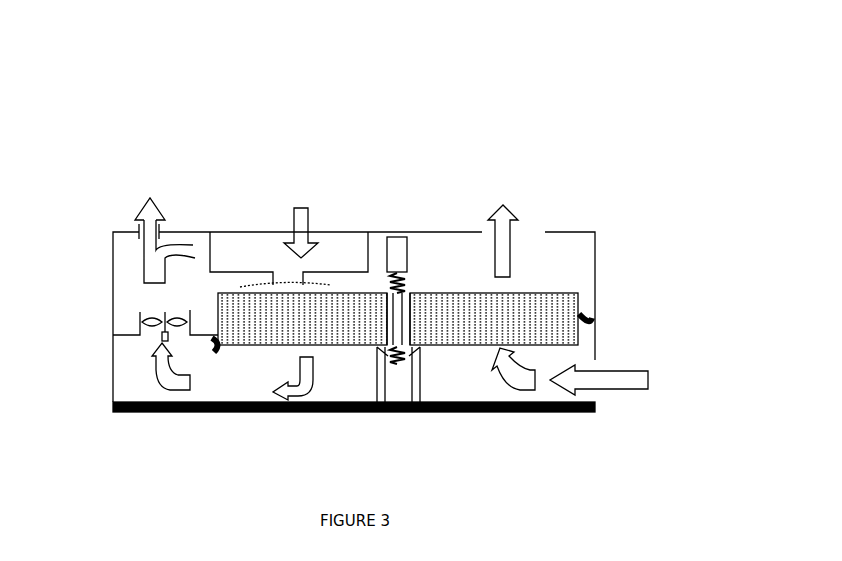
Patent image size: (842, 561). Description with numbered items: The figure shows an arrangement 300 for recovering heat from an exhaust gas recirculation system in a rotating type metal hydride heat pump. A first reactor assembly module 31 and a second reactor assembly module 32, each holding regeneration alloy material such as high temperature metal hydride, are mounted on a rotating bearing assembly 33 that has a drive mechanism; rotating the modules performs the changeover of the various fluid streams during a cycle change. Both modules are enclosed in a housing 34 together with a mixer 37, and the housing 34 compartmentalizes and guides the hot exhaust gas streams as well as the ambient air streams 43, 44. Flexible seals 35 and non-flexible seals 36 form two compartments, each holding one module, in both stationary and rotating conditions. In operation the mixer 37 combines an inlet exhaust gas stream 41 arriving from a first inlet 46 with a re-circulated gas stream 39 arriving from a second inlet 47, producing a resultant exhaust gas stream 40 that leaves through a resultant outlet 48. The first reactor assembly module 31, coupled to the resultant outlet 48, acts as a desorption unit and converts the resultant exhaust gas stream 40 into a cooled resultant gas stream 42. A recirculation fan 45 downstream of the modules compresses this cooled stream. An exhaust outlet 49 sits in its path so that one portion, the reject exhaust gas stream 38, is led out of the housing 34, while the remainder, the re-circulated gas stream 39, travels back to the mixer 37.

The arrangement 300 is at (644, 106).
The first reactor assembly module 31 is at (243, 336).
The second reactor assembly module 32 is at (475, 326).
The rotating bearing assembly 33 is at (378, 359).
The housing 34 is at (598, 240).
The flexible seal 35 is at (392, 272).
The non-flexible seal 36 is at (396, 248).
The mixer 37 is at (229, 243).
The reject exhaust gas stream 38 is at (142, 201).
The re-circulated gas stream 39 is at (192, 243).
The resultant exhaust gas stream 40 is at (268, 284).
The inlet exhaust gas stream 41 is at (304, 208).
The cooled resultant gas stream 42 is at (270, 396).
The ambient air stream 43 is at (634, 391).
The ambient air stream 44 is at (500, 208).
The recirculation fan 45 is at (143, 340).
The first inlet 46 is at (285, 236).
The second inlet 47 is at (205, 261).
The resultant outlet 48 is at (285, 266).
The exhaust outlet 49 is at (133, 220).